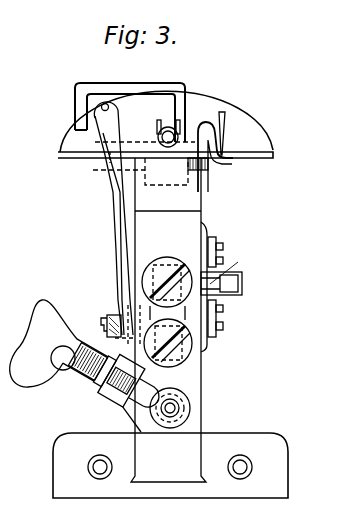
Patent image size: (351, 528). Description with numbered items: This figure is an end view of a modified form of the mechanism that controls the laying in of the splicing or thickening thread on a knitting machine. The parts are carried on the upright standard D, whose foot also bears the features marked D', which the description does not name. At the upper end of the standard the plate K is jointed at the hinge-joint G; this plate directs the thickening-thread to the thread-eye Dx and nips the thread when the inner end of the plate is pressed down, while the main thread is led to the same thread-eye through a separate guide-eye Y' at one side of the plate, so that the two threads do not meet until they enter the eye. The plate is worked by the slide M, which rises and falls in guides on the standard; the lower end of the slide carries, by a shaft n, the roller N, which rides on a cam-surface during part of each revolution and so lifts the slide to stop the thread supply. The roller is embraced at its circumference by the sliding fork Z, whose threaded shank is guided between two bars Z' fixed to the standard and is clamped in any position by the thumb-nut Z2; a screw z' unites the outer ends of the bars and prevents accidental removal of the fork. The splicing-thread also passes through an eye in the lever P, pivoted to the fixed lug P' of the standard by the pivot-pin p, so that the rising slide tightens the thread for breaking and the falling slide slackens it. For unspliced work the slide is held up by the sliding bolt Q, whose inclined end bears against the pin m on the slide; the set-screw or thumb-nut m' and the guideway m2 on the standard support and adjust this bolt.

The standard D is at (170, 465).
The base fastening holes D' is at (166, 474).
The thread-eye Dx is at (167, 127).
The plate K is at (212, 151).
The guide-eye Y' is at (235, 133).
The hinge-joint G is at (210, 166).
The lever P is at (113, 218).
The fixed lug P' is at (123, 319).
The pivot-pin p is at (104, 323).
The slide M is at (168, 320).
The pin m is at (174, 312).
The set-screw or thumb-nut m' is at (231, 283).
The guideway m2 is at (212, 237).
The sliding bolt Q is at (228, 268).
The roller N is at (192, 407).
The shaft n is at (170, 408).
The sliding fork Z is at (121, 380).
The bars Z' is at (111, 384).
The thumb-nut Z2 is at (43, 343).
The screw z' is at (90, 379).